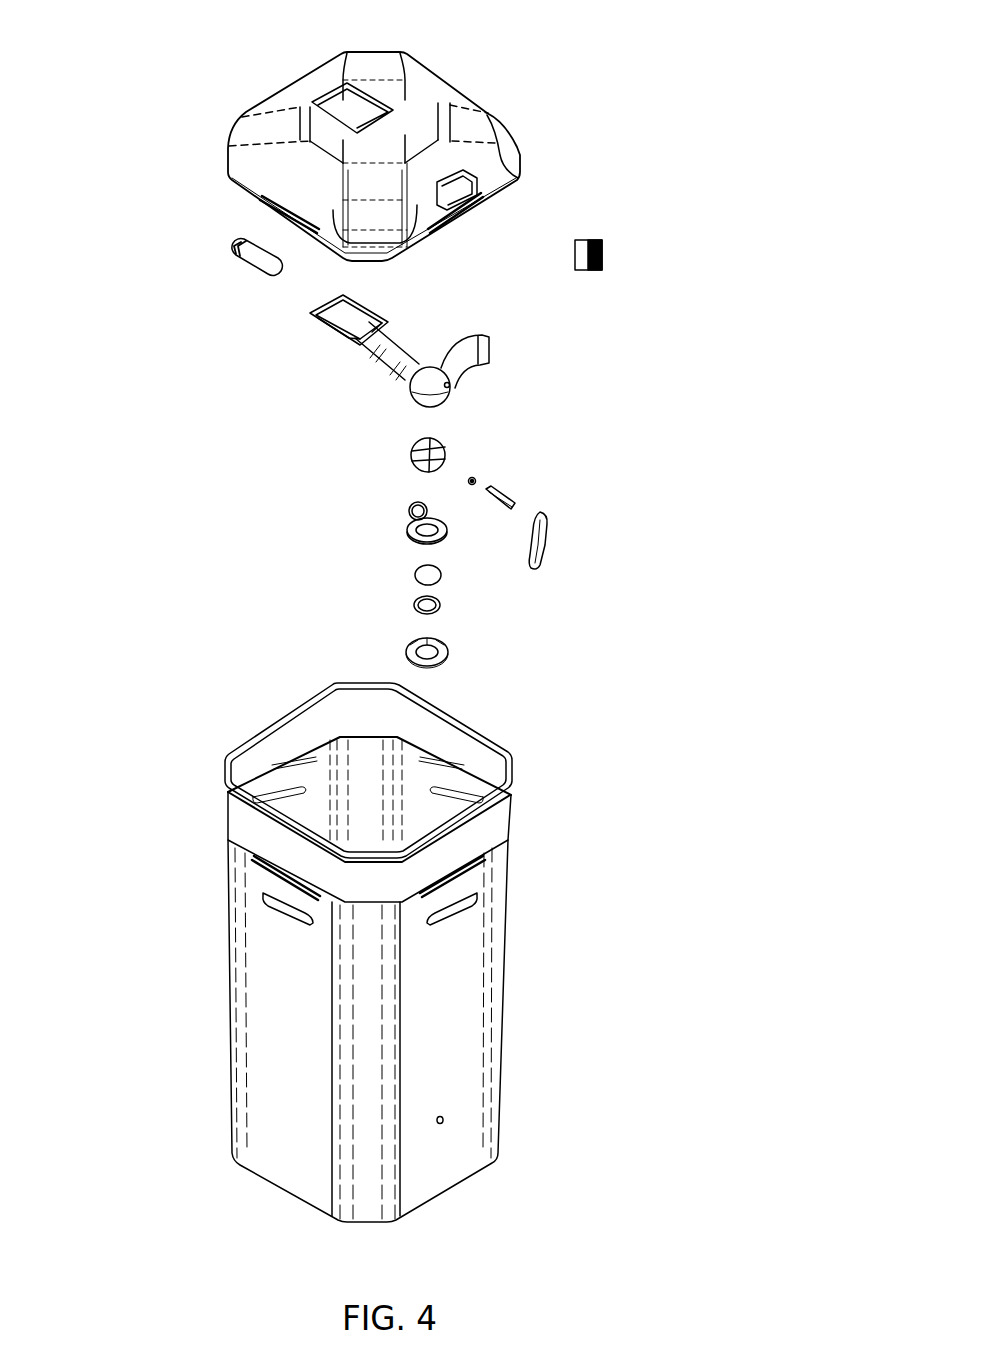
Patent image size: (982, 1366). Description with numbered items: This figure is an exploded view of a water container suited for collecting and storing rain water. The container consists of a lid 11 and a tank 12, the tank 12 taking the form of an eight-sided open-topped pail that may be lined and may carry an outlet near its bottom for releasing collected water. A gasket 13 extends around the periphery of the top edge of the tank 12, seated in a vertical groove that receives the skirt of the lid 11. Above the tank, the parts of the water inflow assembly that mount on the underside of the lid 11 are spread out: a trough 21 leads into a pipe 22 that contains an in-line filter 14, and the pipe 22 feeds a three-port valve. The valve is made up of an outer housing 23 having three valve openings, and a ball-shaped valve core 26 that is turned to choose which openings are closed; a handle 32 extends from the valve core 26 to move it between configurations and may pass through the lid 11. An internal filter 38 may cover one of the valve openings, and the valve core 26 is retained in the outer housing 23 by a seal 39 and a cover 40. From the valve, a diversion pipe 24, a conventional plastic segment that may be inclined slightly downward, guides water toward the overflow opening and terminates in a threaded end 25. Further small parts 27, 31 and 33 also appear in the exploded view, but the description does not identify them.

The lid 11 is at (230, 143).
The tank 12 is at (497, 1057).
The gasket 13 is at (223, 775).
The in-line filter 14 is at (236, 248).
The trough 21 is at (317, 324).
The pipe 22 is at (378, 368).
The outer housing 23 is at (410, 395).
The pipe 24 is at (497, 342).
The threaded end 25 is at (605, 243).
The valve core 26 is at (457, 447).
The ring 27 is at (442, 545).
The lever 31 is at (550, 563).
The handle 32 is at (518, 502).
The screw 33 is at (482, 477).
The internal filter 38 is at (414, 571).
The seal 39 is at (413, 604).
The cover 40 is at (405, 654).